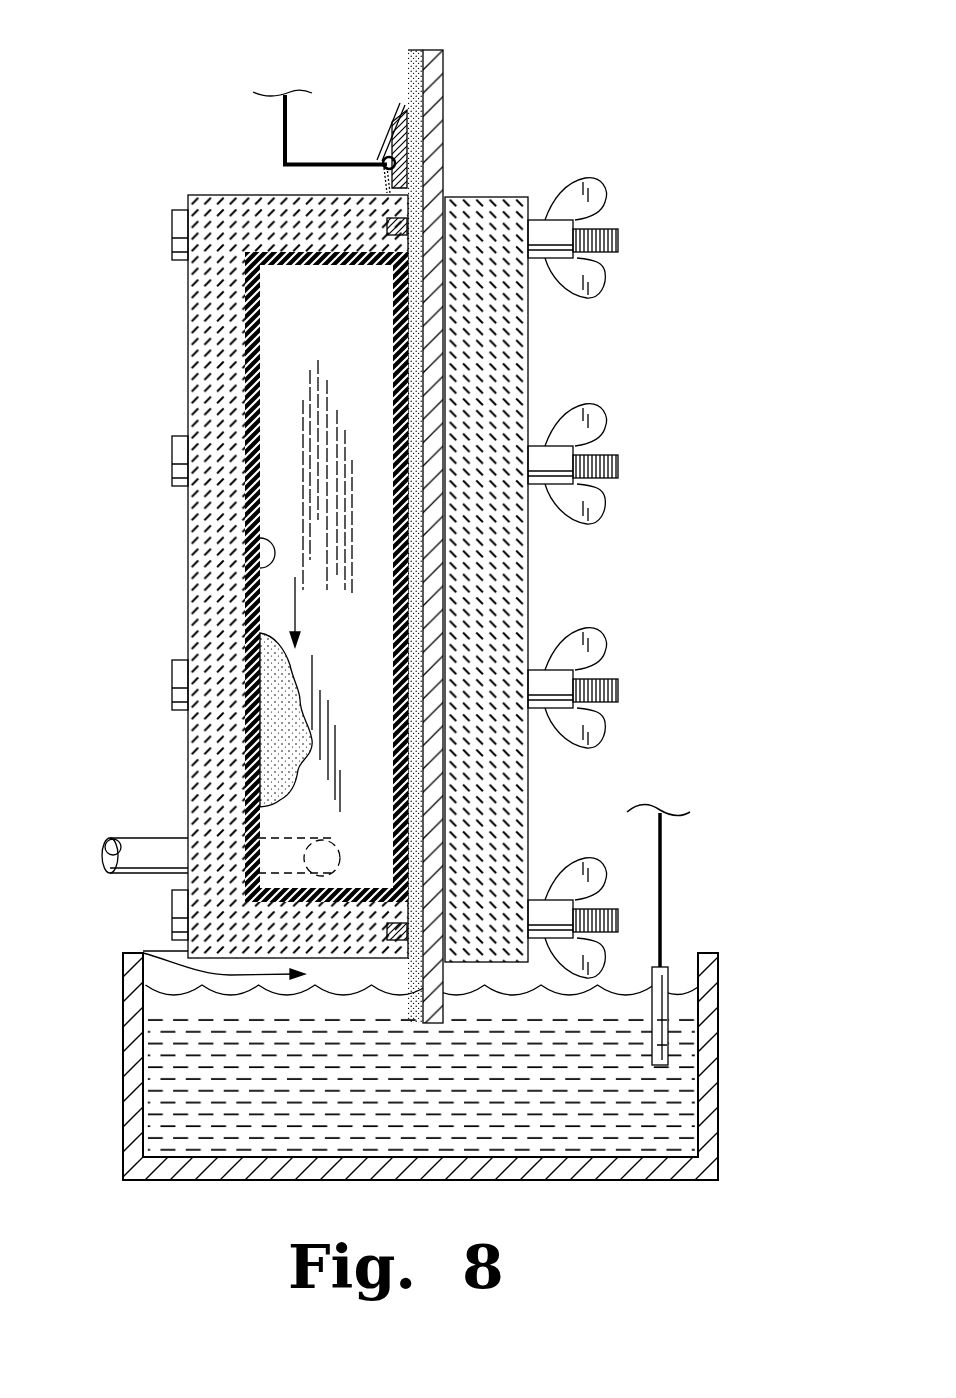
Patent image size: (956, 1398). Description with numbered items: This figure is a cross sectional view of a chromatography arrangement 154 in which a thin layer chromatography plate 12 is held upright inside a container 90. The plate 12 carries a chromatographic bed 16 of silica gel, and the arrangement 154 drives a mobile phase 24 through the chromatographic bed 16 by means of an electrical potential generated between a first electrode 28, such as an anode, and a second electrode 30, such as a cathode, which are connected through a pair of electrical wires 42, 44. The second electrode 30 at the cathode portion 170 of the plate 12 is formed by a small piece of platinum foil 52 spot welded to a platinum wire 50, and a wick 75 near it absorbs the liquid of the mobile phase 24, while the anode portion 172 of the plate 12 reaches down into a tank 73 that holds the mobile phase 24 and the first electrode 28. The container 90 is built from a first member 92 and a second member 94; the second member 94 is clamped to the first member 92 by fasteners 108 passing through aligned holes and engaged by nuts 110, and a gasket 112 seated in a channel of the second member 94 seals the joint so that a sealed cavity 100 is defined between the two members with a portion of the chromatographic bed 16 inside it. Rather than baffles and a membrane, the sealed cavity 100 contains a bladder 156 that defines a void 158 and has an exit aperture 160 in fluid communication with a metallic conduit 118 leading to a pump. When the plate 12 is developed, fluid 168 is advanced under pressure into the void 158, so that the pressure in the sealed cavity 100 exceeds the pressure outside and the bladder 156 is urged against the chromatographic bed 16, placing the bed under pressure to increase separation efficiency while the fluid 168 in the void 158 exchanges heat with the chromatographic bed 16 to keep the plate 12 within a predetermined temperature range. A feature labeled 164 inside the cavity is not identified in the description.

The thin layer chromatography plate 12 is at (440, 116).
The chromatographic bed 16 is at (407, 972).
The mobile phase 24 is at (177, 990).
The first electrode 28 is at (667, 977).
The second electrode 30 is at (358, 140).
The electrical wire 42 is at (664, 862).
The electrical wire 44 is at (285, 133).
The platinum wire 50 is at (388, 180).
The platinum foil 52 is at (397, 103).
The tank 73 is at (718, 1017).
The wick 75 is at (392, 112).
The container 90 is at (163, 143).
The first member 92 is at (510, 197).
The second member 94 is at (200, 358).
The sealed cavity 100 is at (248, 890).
The fastener 108 is at (620, 240).
The nut 110 is at (600, 195).
The gasket 112 is at (405, 222).
The metallic conduit 118 is at (138, 840).
The chromatography arrangement 154 is at (744, 95).
The bladder 156 is at (248, 568).
The void 158 is at (308, 295).
The exit aperture 160 is at (337, 842).
The flow 164 is at (297, 600).
The fluid 168 is at (273, 760).
The cathode portion 170 is at (383, 107).
The anode portion 172 is at (123, 951).